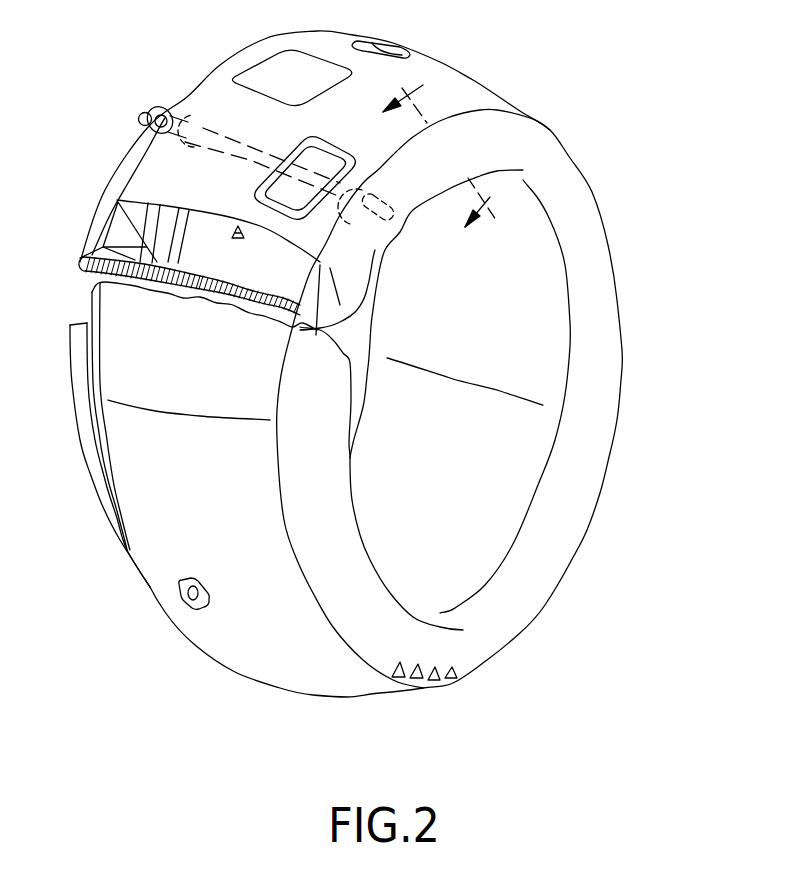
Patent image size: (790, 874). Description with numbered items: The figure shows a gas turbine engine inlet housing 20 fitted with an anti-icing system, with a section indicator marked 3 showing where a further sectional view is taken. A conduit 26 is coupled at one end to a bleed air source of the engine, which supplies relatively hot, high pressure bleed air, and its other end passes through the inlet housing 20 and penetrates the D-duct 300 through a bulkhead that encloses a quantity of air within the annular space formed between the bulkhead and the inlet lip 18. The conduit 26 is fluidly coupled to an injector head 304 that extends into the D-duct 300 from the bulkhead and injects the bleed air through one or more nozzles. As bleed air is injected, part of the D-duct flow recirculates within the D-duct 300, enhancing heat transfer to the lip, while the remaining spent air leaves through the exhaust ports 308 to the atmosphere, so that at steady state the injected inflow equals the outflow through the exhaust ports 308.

The inlet housing 20 is at (580, 86).
The inlet lip 18 is at (592, 192).
The conduit 26 is at (216, 130).
The D-duct 300 is at (345, 310).
The injector head 304 is at (380, 225).
The exhaust ports 308 is at (433, 678).
The section line for FIG. 3 is at (451, 158).